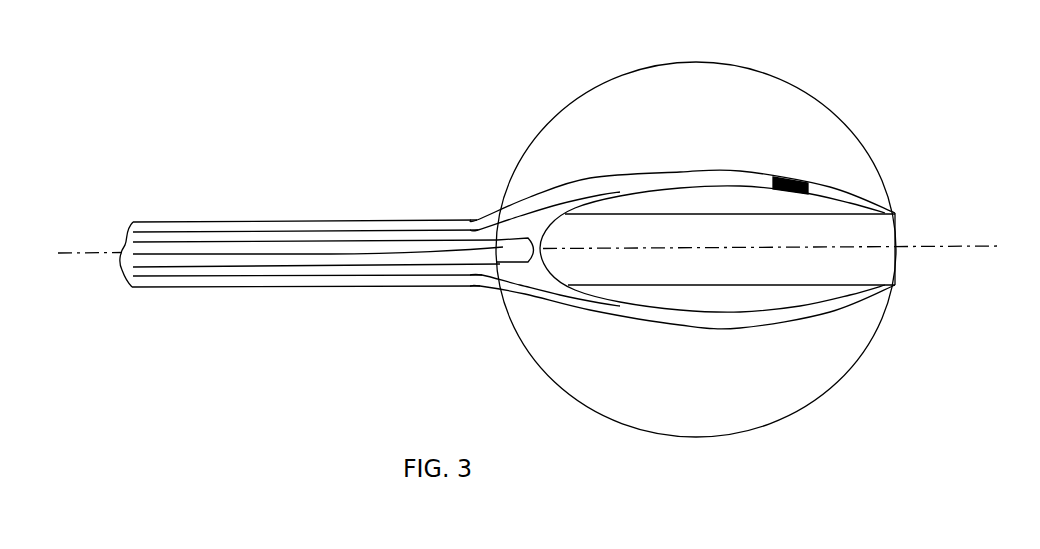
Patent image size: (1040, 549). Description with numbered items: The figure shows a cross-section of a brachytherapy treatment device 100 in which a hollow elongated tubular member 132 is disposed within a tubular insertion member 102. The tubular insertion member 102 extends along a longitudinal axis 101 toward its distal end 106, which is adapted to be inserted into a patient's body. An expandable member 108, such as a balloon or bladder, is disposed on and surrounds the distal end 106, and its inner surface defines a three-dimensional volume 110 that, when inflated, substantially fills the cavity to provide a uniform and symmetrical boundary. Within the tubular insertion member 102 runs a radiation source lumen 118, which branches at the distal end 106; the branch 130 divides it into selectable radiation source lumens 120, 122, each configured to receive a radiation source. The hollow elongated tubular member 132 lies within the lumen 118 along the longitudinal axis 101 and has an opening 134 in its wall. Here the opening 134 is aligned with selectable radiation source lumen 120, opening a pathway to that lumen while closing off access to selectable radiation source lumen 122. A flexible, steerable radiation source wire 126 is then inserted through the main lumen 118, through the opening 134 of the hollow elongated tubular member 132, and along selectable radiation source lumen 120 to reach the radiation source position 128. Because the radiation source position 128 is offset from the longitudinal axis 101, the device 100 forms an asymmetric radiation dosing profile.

The brachytherapy treatment device 100 is at (196, 53).
The longitudinal axis 101 is at (933, 247).
The tubular insertion member 102 is at (173, 208).
The distal end 106 is at (921, 342).
The expandable member 108 is at (849, 109).
The three-dimensional volume 110 is at (714, 118).
The radiation source lumen 118 is at (235, 268).
The selectable radiation source lumen 120 is at (570, 197).
The selectable radiation source lumen 122 is at (592, 303).
The radiation source wire 126 is at (367, 253).
The radiation source position 128 is at (788, 180).
The branch 130 is at (519, 306).
The hollow elongated tubular member 132 is at (287, 230).
The opening 134 is at (499, 266).